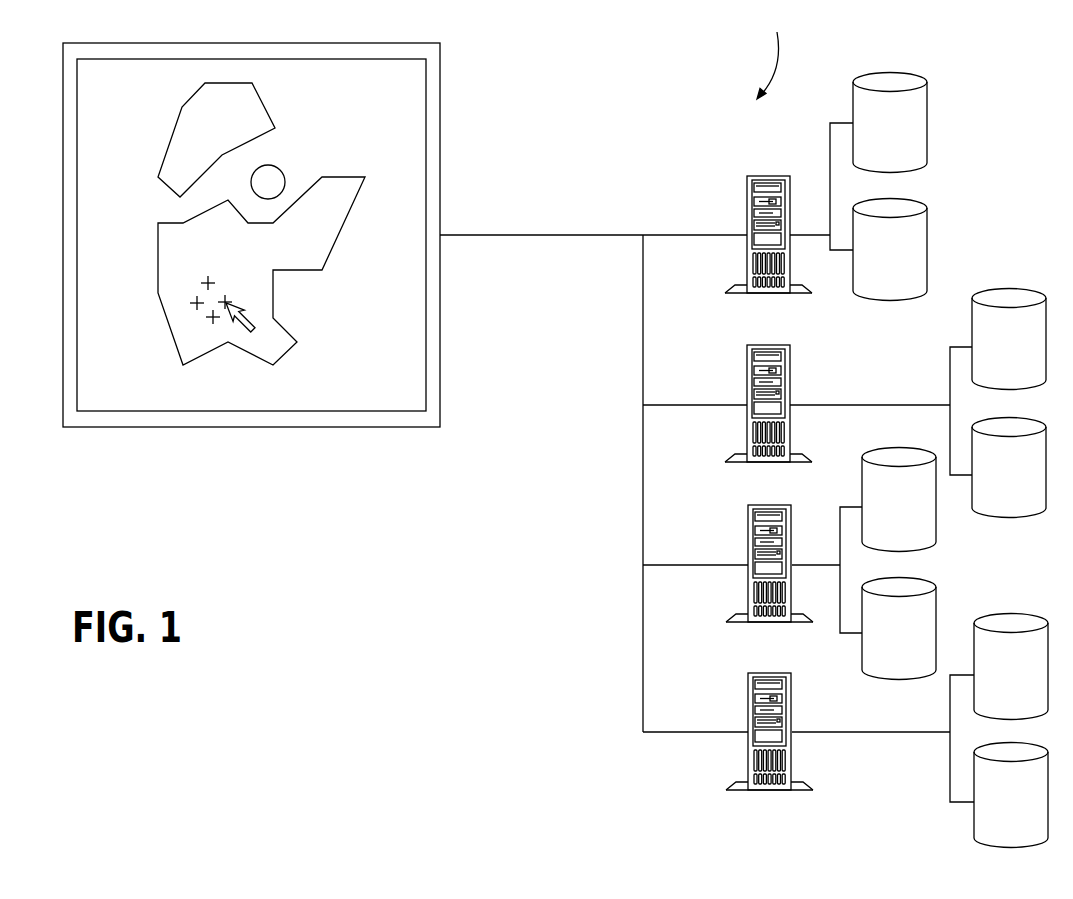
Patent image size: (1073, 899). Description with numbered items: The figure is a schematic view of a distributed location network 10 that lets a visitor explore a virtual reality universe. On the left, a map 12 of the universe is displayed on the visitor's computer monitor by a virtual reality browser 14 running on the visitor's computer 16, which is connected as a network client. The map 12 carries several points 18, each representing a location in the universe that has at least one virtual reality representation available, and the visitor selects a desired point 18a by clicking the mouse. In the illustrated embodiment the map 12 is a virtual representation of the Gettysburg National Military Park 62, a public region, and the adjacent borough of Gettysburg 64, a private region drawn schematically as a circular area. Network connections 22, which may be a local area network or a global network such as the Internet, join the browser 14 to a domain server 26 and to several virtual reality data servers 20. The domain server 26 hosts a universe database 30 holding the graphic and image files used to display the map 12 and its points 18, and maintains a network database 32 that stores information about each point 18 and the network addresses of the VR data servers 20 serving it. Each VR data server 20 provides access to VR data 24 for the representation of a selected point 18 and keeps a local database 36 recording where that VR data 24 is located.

The distributed location network 10 is at (771, 53).
The map 12 is at (355, 203).
The virtual reality browser 14 is at (426, 137).
The visitor's computer 16 is at (297, 427).
The points 18 is at (190, 303).
The selected point 18a is at (230, 298).
The virtual reality data servers 20 is at (747, 355).
The network connections 22 is at (575, 237).
The VR data 24 is at (955, 504).
The domain server 26 is at (747, 178).
The universe database 30 is at (890, 123).
The network database 32 is at (890, 250).
The local database 36 is at (955, 633).
The Gettysburg National Military Park 62 is at (328, 192).
The borough of Gettysburg 64 is at (252, 182).